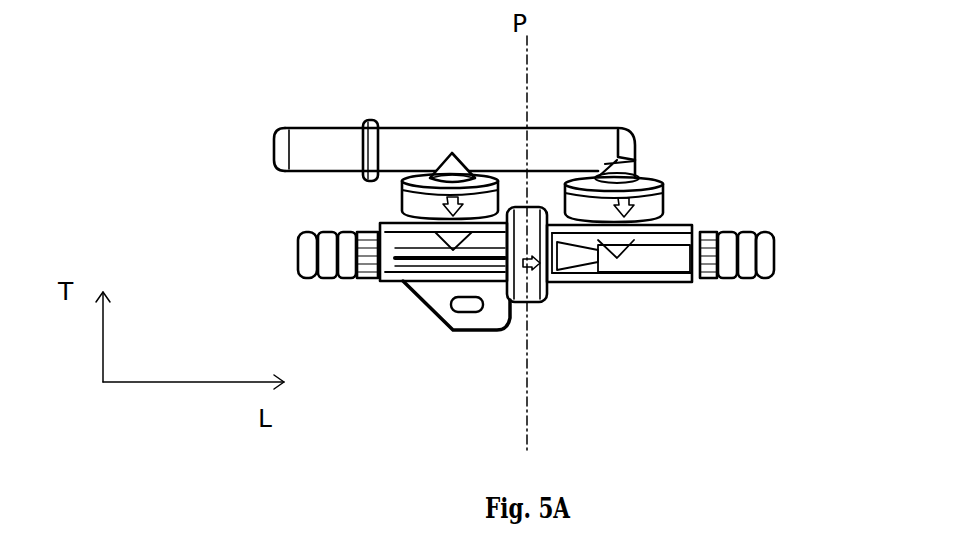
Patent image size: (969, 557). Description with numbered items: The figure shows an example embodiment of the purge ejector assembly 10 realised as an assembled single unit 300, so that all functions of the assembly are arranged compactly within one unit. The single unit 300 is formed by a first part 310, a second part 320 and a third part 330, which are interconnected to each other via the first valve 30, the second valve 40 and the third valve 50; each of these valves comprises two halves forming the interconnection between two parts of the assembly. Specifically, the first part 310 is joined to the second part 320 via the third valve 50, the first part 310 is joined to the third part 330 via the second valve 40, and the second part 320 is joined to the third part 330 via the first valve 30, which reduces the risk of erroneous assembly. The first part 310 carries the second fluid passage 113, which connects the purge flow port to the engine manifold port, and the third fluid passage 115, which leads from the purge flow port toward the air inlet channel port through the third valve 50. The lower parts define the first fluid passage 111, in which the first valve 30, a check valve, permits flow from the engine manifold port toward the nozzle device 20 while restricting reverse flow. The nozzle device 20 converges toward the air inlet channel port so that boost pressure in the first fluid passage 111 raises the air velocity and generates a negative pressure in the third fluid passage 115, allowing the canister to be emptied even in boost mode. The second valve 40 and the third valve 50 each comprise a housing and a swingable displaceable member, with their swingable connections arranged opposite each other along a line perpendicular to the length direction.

The purge ejector assembly 10 is at (251, 87).
The assembled single unit 300 is at (250, 86).
The first part 310 is at (410, 101).
The second fluid passage 113 is at (553, 146).
The third fluid passage 115 is at (620, 161).
The third valve 50 is at (675, 190).
The second valve 40 is at (402, 207).
The nozzle device 20 is at (570, 283).
The first fluid passage 111 is at (650, 268).
The first valve 30 is at (522, 302).
The third part 330 is at (391, 313).
The second part 320 is at (686, 305).